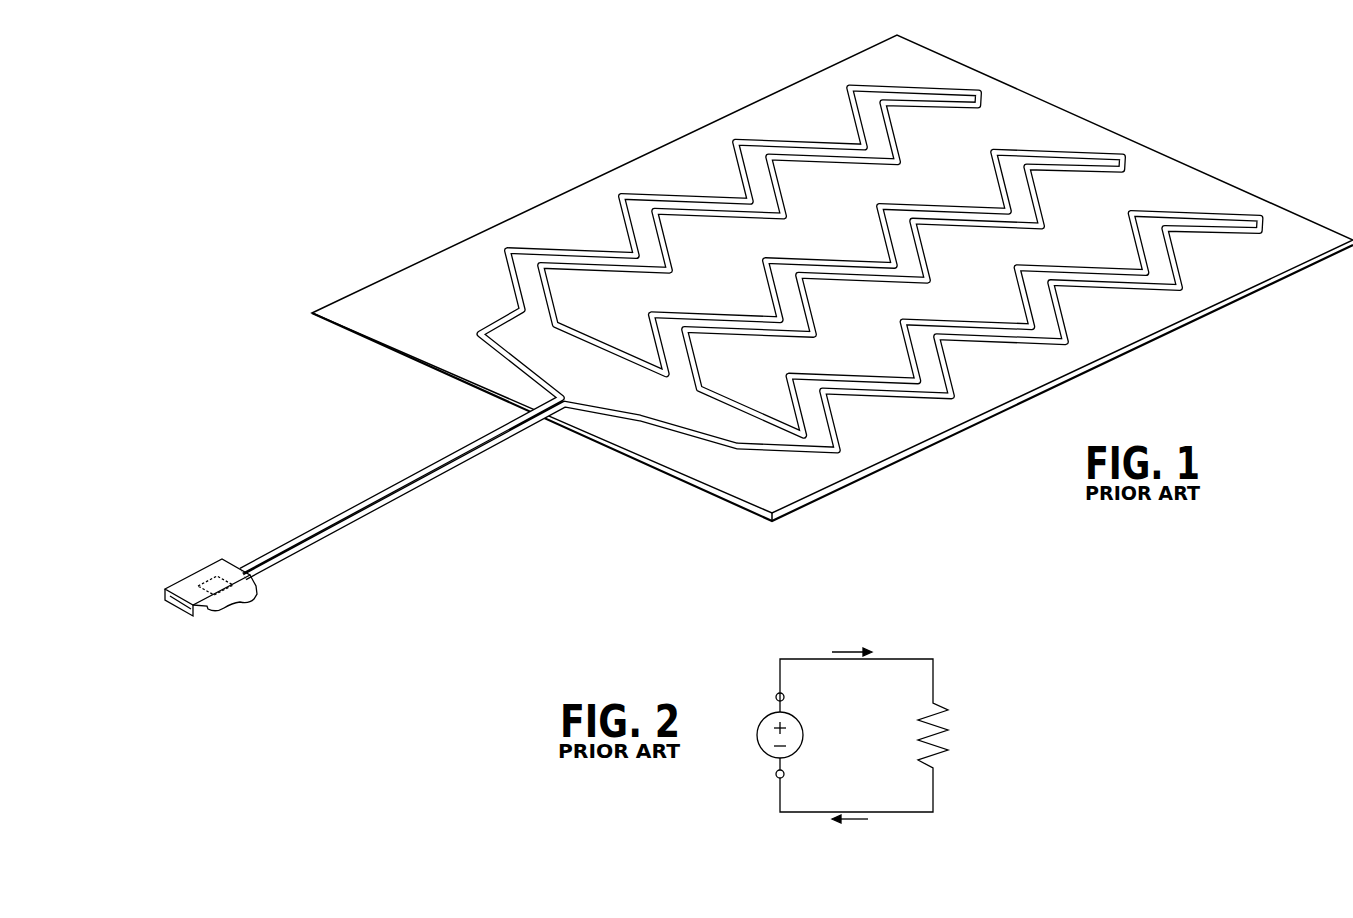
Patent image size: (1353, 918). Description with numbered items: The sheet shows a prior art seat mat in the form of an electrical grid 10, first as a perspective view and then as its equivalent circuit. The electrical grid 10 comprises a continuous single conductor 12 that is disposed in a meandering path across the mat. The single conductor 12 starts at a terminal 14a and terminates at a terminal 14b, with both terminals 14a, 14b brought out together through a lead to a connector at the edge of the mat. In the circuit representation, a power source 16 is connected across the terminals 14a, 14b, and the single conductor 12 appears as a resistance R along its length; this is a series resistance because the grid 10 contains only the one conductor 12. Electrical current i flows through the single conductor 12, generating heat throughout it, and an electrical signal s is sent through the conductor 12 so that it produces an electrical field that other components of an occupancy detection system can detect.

In FIG. 1, the electrical grid 10 is at (843, 54).
In FIG. 1, the single conductor 12 is at (683, 193).
In FIG. 2, the single conductor 12 is at (895, 659).
In FIG. 1, the terminal 14a is at (212, 578).
In FIG. 2, the terminal 14a is at (776, 697).
In FIG. 1, the terminal 14b is at (256, 600).
In FIG. 2, the terminal 14b is at (775, 774).
In FIG. 2, the power source 16 is at (761, 749).